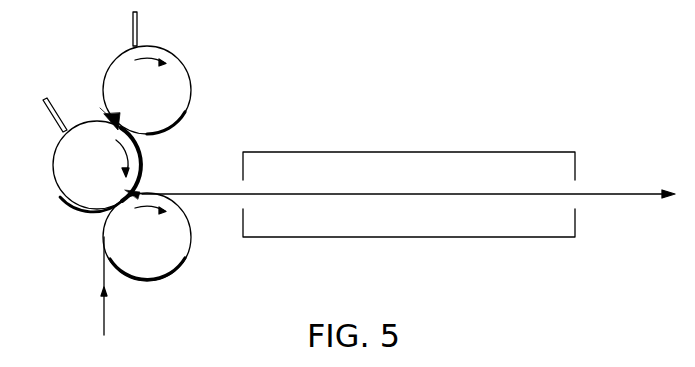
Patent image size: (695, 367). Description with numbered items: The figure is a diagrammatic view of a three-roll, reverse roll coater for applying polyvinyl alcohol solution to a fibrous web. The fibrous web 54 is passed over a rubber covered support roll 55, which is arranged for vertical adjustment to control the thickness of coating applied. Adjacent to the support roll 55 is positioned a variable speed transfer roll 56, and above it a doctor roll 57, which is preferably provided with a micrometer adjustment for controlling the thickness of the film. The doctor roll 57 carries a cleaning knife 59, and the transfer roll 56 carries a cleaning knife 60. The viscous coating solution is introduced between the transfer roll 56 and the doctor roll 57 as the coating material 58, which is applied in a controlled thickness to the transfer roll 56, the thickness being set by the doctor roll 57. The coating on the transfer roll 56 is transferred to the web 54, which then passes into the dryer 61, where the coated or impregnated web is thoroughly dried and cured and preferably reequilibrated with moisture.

The fibrous web 54 is at (104, 329).
The rubber covered support roll 55 is at (178, 262).
The variable speed transfer roll 56 is at (63, 181).
The doctor roll 57 is at (165, 128).
The coating material 58 is at (104, 114).
The cleaning knife 59 is at (133, 28).
The cleaning knife 60 is at (59, 122).
The dryer 61 is at (379, 237).